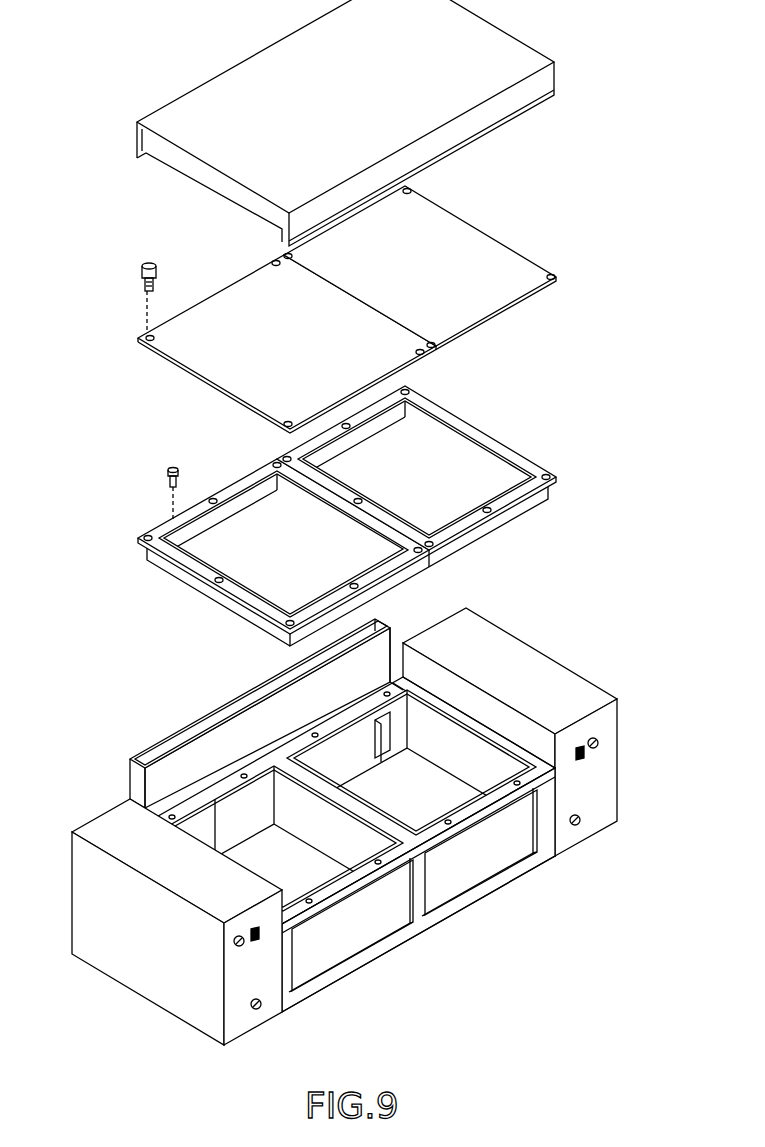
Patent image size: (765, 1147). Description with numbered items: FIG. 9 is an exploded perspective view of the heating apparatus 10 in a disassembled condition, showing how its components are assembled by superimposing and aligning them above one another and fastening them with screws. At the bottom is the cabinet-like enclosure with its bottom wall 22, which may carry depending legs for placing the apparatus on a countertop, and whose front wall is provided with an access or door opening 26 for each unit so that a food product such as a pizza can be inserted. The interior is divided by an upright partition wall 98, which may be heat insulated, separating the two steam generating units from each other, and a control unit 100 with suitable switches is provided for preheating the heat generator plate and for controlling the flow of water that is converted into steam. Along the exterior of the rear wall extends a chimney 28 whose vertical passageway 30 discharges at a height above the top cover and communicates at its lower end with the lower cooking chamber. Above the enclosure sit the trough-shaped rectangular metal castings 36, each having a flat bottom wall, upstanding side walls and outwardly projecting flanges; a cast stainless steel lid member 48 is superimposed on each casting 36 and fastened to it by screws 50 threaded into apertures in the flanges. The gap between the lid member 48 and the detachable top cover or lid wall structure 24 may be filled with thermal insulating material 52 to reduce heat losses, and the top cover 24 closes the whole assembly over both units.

The heating apparatus 10 is at (548, 395).
The bottom wall 22 is at (340, 815).
The top cover or lid wall structure 24 is at (344, 123).
The access or door opening 26 is at (493, 878).
The chimney 28 is at (183, 727).
The vertical passageway 30 is at (330, 763).
The casting 36 is at (503, 520).
The lid member 48 is at (523, 250).
The screws 50 is at (140, 273).
The thermal insulating material 52 is at (210, 182).
The upright partition wall 98 is at (357, 855).
The control unit 100 is at (543, 652).